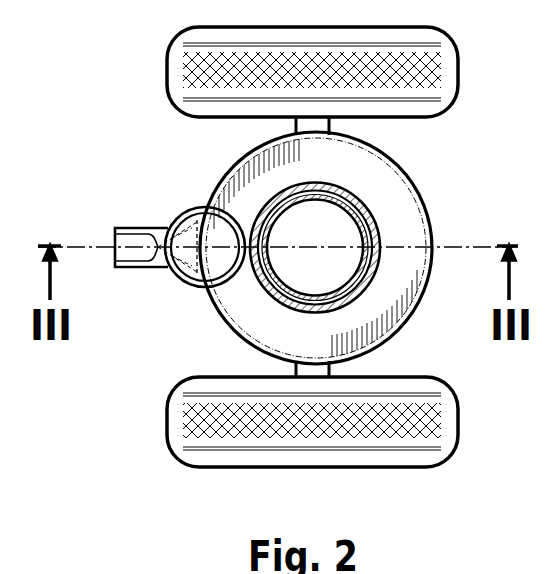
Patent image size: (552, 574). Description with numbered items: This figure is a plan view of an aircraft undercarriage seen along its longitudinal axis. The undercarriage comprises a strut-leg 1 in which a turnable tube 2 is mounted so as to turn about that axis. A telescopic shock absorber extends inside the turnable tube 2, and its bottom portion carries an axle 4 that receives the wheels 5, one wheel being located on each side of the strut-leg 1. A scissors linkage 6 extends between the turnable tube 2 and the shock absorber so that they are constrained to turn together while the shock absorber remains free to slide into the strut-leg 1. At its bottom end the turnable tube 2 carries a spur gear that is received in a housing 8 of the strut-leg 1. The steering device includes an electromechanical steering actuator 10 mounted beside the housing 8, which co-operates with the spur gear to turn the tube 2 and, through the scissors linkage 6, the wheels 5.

The strut-leg 1 is at (366, 206).
The turnable tube 2 is at (372, 272).
The axle 4 is at (332, 122).
The wheels 5 is at (458, 68).
The scissors linkage 6 is at (135, 267).
The housing 8 is at (396, 183).
The electromechanical steering actuator 10 is at (166, 214).